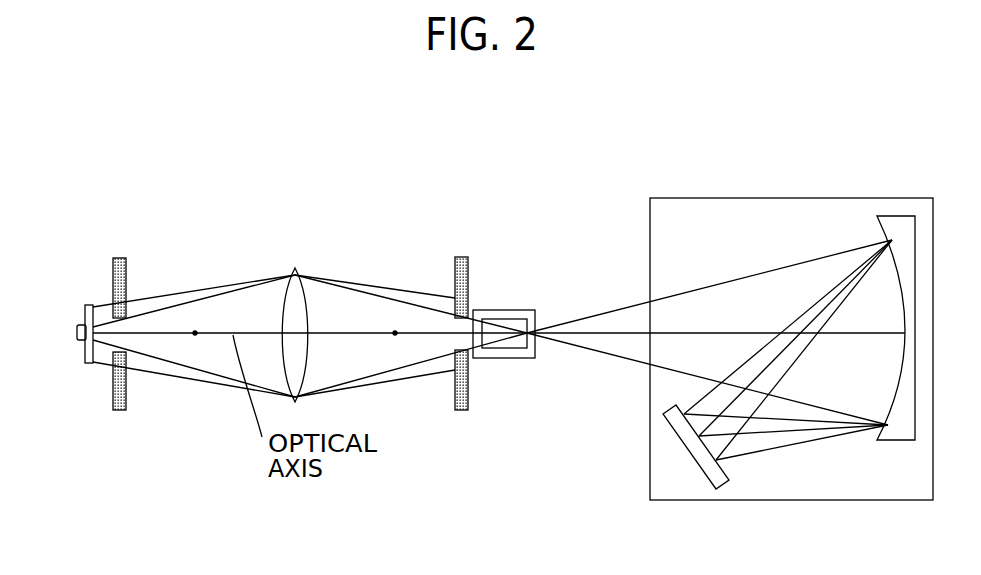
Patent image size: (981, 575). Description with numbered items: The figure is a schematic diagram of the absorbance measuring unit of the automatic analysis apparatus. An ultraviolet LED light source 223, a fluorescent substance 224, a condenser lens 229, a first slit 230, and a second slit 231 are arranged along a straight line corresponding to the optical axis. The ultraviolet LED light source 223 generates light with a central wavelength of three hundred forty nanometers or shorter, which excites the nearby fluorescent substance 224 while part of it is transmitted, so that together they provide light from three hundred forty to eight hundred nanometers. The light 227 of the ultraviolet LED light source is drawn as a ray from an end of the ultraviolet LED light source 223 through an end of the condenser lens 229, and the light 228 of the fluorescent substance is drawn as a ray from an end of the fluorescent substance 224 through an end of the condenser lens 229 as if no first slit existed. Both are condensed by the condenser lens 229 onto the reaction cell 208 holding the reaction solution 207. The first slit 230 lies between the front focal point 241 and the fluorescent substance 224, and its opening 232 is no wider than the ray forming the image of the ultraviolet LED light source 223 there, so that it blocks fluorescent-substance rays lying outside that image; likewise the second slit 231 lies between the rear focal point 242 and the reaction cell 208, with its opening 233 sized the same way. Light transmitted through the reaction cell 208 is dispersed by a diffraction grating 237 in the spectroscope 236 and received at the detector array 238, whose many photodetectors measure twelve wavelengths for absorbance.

The ultraviolet LED light source 223 is at (82, 327).
The fluorescent substance 224 is at (90, 305).
The first slit 230 is at (120, 258).
The opening of the first slit 232 is at (122, 340).
The light of the ultraviolet LED light source 227 is at (163, 307).
The front focal point 241 is at (195, 333).
The condenser lens 229 is at (295, 272).
The light of the fluorescent substance 228 is at (383, 381).
The rear focal point 242 is at (395, 333).
The second slit 231 is at (459, 257).
The opening of the second slit 233 is at (462, 327).
The reaction cell 208 is at (493, 310).
The reaction solution 207 is at (522, 323).
The spectroscope 236 is at (683, 198).
The diffraction grating 237 is at (898, 226).
The detector array 238 is at (705, 473).